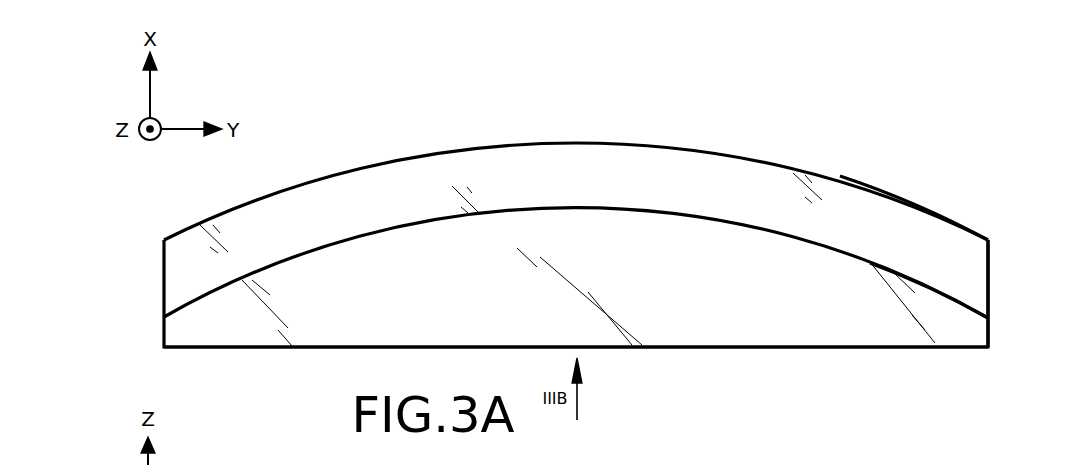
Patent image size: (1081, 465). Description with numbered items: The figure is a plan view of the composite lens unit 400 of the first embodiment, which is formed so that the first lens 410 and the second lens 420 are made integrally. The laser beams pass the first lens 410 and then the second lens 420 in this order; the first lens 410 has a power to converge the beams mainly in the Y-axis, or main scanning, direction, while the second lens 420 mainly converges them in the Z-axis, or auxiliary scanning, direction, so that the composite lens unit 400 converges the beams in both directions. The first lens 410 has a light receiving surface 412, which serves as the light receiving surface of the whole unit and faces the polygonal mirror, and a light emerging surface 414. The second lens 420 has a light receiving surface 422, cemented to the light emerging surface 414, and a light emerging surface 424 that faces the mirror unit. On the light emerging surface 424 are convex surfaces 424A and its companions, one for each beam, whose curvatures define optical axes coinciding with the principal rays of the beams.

The composite lens unit 400 is at (619, 239).
The first lens 410 is at (1000, 333).
The light receiving surface 412 is at (760, 348).
The light emerging surface 414 is at (967, 305).
The second lens 420 is at (1000, 254).
The light receiving surface 422 is at (938, 297).
The light emerging surface 424 is at (696, 150).
The convex surface 424A is at (918, 206).